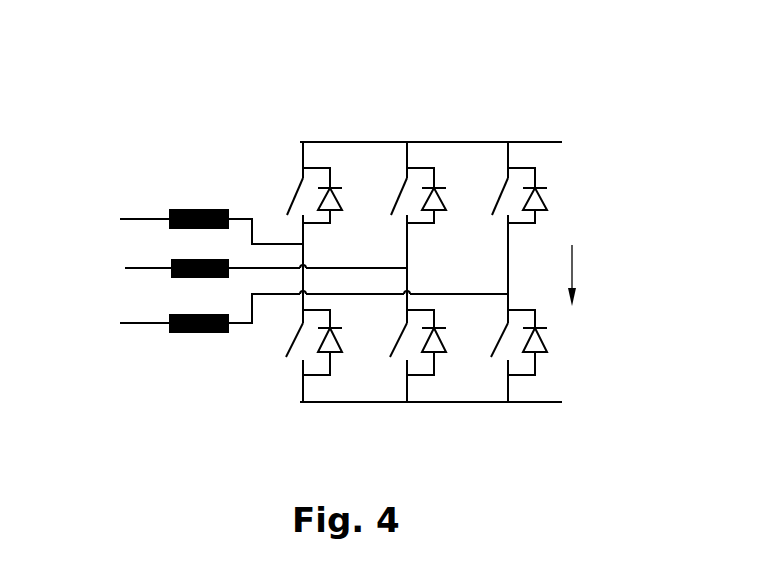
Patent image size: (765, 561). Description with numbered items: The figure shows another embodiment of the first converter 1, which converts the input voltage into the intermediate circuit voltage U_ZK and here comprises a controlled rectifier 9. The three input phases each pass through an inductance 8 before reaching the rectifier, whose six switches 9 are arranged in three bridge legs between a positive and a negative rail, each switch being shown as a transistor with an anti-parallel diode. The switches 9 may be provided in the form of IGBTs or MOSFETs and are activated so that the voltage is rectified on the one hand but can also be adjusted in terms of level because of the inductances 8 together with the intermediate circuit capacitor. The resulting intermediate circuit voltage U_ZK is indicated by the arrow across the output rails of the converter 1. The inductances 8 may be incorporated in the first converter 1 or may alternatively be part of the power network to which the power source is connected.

The first converter 1 is at (652, 97).
The inductances 8 is at (195, 210).
The controlled rectifier 9 is at (547, 123).